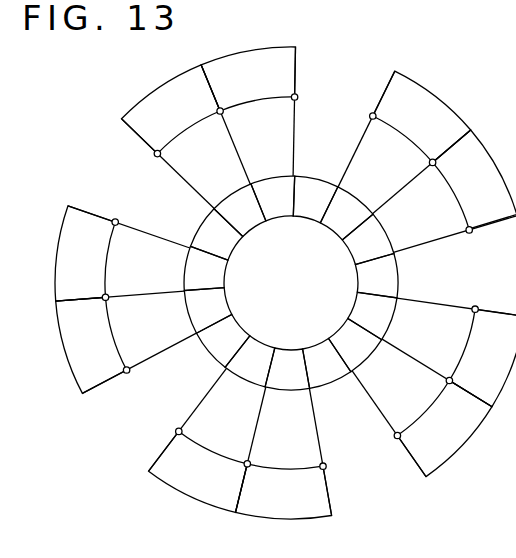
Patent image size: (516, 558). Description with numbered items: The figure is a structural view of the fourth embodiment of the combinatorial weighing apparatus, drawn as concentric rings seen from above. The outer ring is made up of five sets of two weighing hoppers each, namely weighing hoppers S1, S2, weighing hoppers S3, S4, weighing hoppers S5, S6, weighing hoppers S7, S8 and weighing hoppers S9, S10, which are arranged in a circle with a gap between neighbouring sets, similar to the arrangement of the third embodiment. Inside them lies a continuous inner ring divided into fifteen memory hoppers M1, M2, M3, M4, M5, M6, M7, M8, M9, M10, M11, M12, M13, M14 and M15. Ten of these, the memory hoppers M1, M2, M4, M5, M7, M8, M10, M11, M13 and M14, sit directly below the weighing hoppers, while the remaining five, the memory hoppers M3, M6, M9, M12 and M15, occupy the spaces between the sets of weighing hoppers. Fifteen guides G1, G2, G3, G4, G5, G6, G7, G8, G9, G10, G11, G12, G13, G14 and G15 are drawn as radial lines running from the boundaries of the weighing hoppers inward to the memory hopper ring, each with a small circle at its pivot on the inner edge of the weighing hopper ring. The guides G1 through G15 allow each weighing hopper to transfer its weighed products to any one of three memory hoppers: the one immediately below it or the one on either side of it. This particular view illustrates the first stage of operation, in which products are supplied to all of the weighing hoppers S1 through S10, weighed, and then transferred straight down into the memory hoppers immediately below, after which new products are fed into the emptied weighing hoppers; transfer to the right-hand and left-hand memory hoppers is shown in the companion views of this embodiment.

The memory hopper M1 is at (240, 210).
The memory hopper M2 is at (273, 198).
The memory hopper M3 is at (315, 199).
The memory hopper M4 is at (346, 213).
The memory hopper M5 is at (368, 239).
The memory hopper M6 is at (376, 276).
The memory hopper M7 is at (372, 315).
The memory hopper M8 is at (355, 345).
The memory hopper M9 is at (327, 364).
The memory hopper M10 is at (287, 369).
The memory hopper M11 is at (250, 361).
The memory hopper M12 is at (223, 341).
The memory hopper M13 is at (208, 311).
The memory hopper M14 is at (206, 268).
The memory hopper M15 is at (217, 234).
The weighing hopper S1 is at (171, 109).
The weighing hopper S2 is at (248, 79).
The weighing hopper S3 is at (422, 116).
The weighing hopper S4 is at (474, 179).
The weighing hopper S5 is at (482, 358).
The weighing hopper S6 is at (444, 429).
The weighing hopper S7 is at (284, 491).
The weighing hopper S8 is at (198, 471).
The weighing hopper S9 is at (91, 345).
The weighing hopper S10 is at (85, 253).
The guide G1 is at (185, 180).
The guide G2 is at (235, 147).
The guide G3 is at (294, 130).
The guide G4 is at (353, 157).
The guide G5 is at (414, 178).
The guide G6 is at (452, 235).
The guide G7 is at (444, 305).
The guide G8 is at (410, 356).
The guide G9 is at (374, 402).
The guide G10 is at (316, 425).
The guide G11 is at (255, 434).
The guide G12 is at (198, 407).
The guide G13 is at (154, 356).
The guide G14 is at (143, 294).
The guide G15 is at (149, 234).